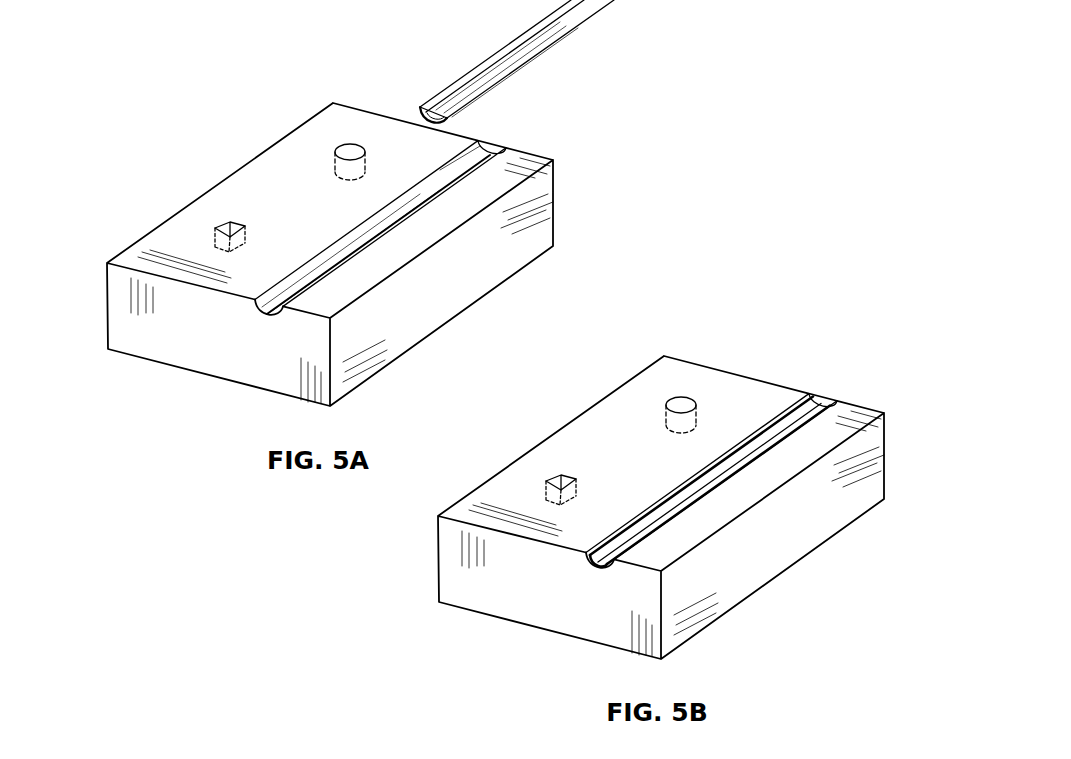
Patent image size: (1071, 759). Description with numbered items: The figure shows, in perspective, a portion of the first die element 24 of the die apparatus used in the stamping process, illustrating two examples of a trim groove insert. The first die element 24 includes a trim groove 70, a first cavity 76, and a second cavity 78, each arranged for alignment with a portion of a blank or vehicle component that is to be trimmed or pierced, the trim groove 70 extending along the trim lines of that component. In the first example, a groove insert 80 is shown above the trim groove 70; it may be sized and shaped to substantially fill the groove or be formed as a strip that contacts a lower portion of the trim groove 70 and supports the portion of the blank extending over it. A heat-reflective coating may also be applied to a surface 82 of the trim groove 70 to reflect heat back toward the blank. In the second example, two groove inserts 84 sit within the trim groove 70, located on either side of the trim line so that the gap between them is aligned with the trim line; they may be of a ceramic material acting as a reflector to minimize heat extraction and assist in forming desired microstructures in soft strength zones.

In FIG. 5A, the first die element 24 is at (468, 287).
In FIG. 5B, the first die element 24 is at (799, 540).
In FIG. 5A, the trim groove 70 is at (200, 140).
In FIG. 5B, the trim groove 70 is at (582, 561).
In FIG. 5A, the first cavity 76 is at (214, 229).
In FIG. 5B, the first cavity 76 is at (545, 482).
In FIG. 5A, the second cavity 78 is at (363, 140).
In FIG. 5B, the second cavity 78 is at (693, 392).
In FIG. 5A, the groove insert 80 is at (560, 40).
In FIG. 5A, the surface of the trim groove 82 is at (270, 298).
In FIG. 5B, the groove inserts 84 is at (665, 512).